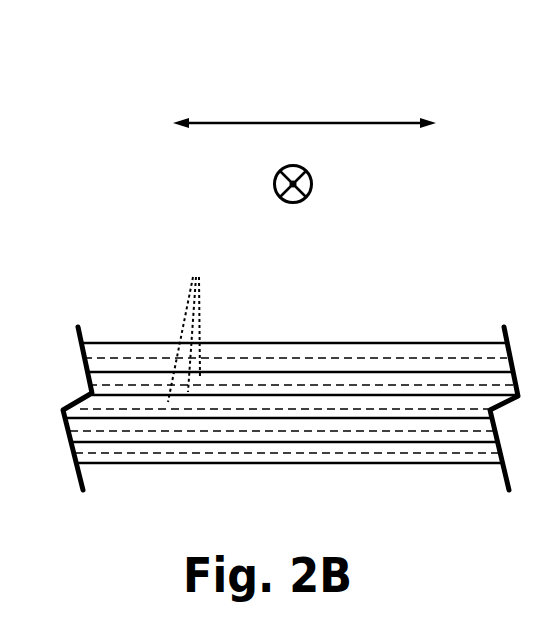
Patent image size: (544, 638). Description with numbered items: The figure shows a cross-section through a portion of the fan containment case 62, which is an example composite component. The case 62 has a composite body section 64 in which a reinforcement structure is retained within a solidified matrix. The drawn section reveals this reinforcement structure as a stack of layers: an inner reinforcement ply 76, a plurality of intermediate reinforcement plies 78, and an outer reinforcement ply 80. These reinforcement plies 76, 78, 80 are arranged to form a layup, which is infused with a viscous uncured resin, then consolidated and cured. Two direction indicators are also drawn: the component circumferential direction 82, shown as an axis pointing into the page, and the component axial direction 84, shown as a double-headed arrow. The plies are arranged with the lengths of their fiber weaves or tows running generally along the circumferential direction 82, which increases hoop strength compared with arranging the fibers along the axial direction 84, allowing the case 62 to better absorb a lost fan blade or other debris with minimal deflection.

The fan containment case 62 is at (467, 221).
The body section 64 is at (395, 296).
The inner reinforcement ply 76 is at (75, 455).
The plurality of intermediate reinforcement plies 78 is at (189, 326).
The outer reinforcement ply 80 is at (283, 357).
The component circumferential direction 82 is at (313, 183).
The component axial direction 84 is at (282, 123).